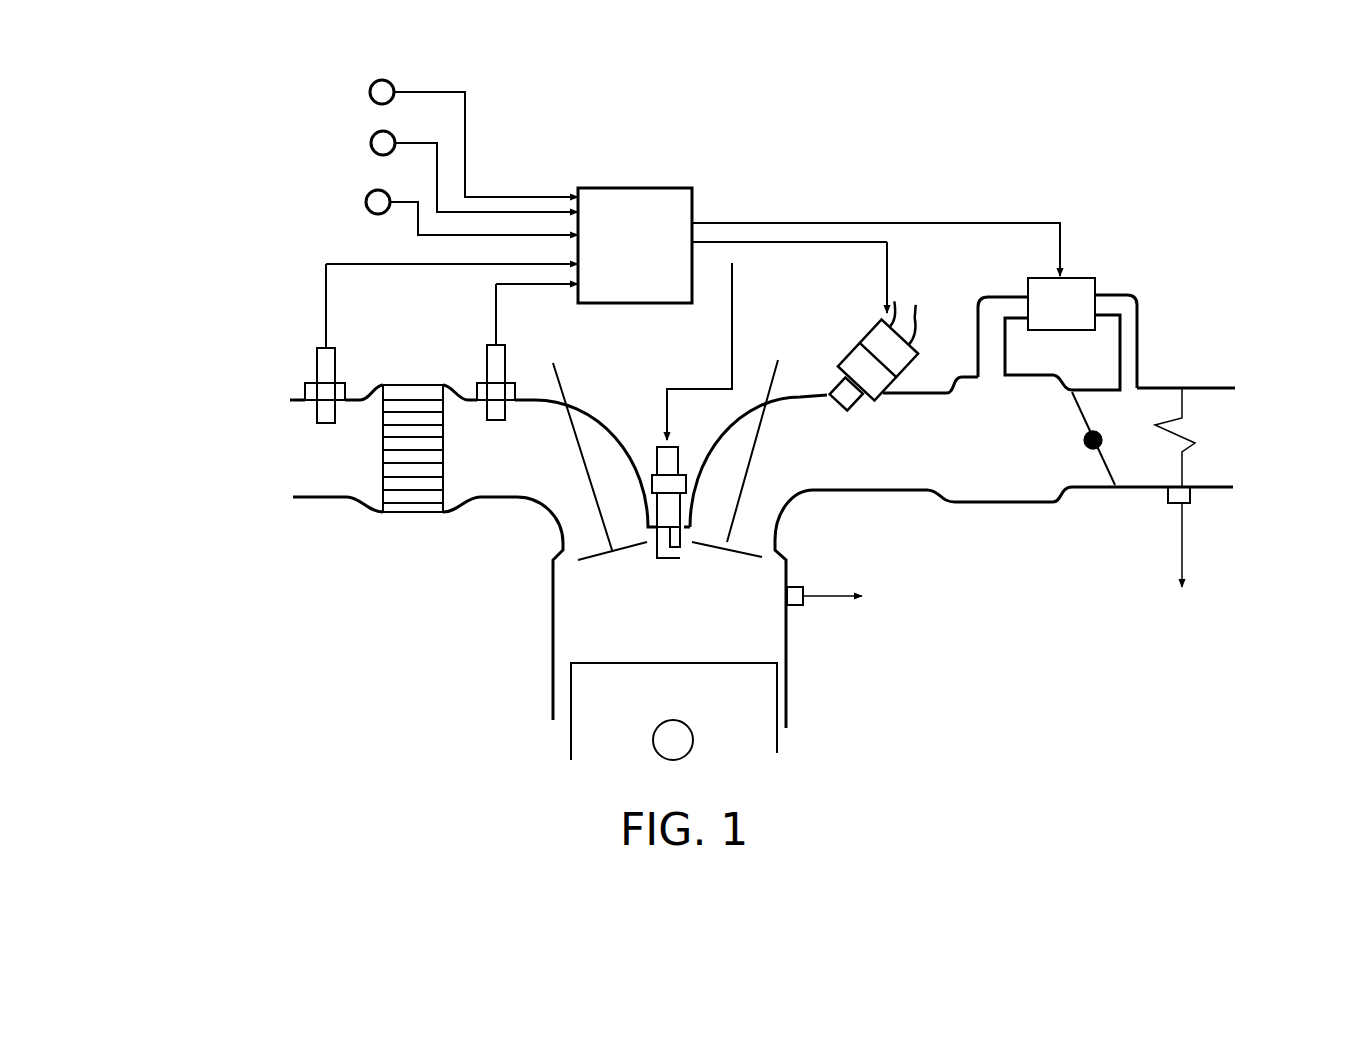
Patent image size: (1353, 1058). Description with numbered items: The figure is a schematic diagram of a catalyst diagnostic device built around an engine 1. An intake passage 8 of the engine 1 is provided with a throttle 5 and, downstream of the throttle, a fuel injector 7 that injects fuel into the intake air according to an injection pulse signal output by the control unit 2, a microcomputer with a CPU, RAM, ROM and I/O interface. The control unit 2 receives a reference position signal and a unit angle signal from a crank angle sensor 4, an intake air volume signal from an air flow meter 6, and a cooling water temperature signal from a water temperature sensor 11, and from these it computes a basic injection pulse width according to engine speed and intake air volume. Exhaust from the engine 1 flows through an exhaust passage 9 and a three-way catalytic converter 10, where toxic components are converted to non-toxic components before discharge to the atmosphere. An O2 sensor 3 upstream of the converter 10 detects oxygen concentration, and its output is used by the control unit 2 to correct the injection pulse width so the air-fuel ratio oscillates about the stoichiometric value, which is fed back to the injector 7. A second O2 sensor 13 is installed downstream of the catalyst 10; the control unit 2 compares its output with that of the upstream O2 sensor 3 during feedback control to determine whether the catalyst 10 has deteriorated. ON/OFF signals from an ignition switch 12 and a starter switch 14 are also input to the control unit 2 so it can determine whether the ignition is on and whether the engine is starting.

The engine 1 is at (553, 663).
The control unit 2 is at (638, 189).
The O2 sensor 3 is at (487, 357).
The crank angle sensor 4 is at (365, 201).
The throttle 5 is at (1085, 426).
The air flow meter 6 is at (1192, 493).
The fuel injector 7 is at (853, 355).
The intake passage 8 is at (927, 492).
The exhaust passage 9 is at (509, 497).
The three-way catalytic converter 10 is at (383, 452).
The water temperature sensor 11 is at (798, 607).
The ignition switch 12 is at (371, 144).
The O2 sensor 13 is at (317, 362).
The starter switch 14 is at (370, 94).